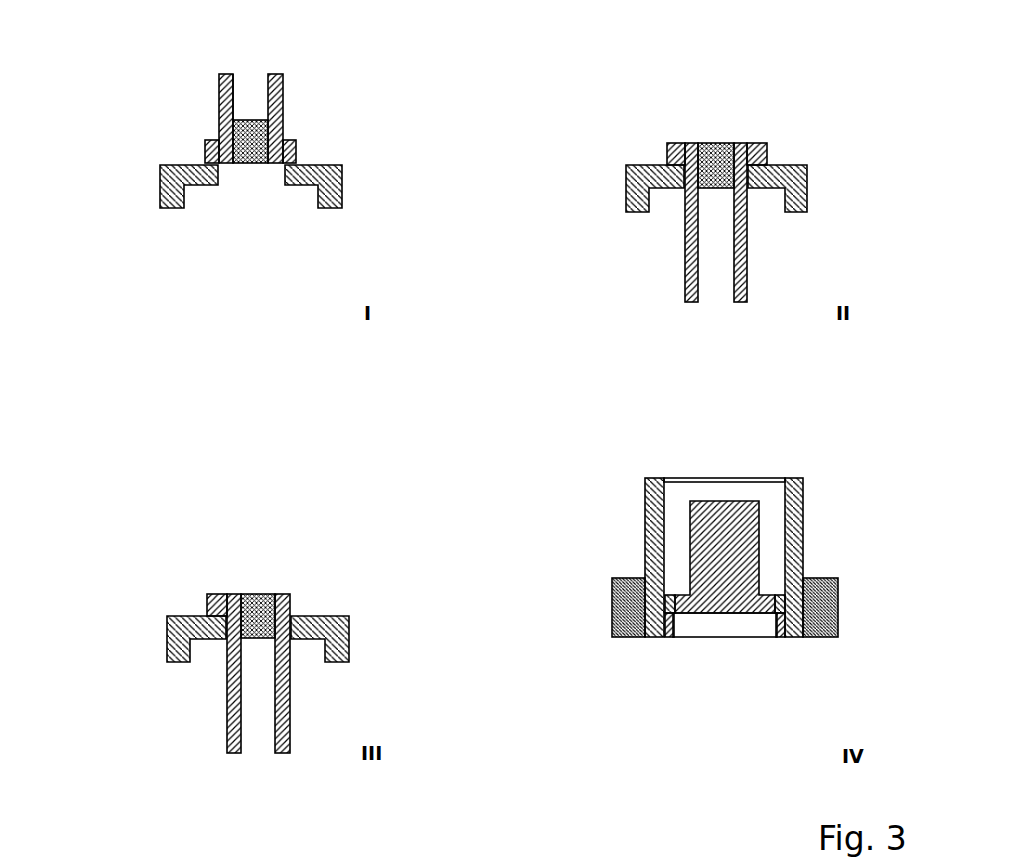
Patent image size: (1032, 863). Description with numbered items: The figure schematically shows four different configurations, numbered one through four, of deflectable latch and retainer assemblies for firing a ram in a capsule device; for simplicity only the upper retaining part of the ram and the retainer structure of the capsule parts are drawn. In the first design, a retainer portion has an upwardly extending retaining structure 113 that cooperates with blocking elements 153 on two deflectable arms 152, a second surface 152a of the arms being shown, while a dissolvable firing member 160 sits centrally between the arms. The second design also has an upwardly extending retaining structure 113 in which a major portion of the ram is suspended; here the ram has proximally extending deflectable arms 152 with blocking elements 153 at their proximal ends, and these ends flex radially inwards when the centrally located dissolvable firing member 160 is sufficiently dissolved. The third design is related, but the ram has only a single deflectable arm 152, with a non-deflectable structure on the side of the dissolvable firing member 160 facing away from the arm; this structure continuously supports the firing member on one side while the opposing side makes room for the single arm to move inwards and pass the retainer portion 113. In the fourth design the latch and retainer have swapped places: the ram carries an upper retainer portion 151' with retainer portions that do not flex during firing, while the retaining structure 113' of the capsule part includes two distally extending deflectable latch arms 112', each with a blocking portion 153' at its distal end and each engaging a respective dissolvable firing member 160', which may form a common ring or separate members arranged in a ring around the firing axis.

The retaining structure 113 is at (466, 399).
The deflectable arm 152 is at (220, 103).
The second surface 152a is at (236, 118).
The blocking element 153 is at (459, 357).
The dissolvable firing member 160 is at (522, 337).
The deflectable latch arm 112' is at (725, 555).
The retaining structure 113' is at (720, 656).
The upper retainer portion 151' is at (757, 518).
The blocking portion 153' is at (727, 568).
The dissolvable firing member 160' is at (726, 608).